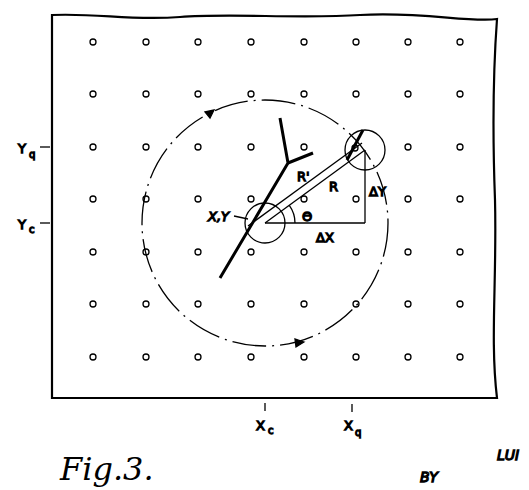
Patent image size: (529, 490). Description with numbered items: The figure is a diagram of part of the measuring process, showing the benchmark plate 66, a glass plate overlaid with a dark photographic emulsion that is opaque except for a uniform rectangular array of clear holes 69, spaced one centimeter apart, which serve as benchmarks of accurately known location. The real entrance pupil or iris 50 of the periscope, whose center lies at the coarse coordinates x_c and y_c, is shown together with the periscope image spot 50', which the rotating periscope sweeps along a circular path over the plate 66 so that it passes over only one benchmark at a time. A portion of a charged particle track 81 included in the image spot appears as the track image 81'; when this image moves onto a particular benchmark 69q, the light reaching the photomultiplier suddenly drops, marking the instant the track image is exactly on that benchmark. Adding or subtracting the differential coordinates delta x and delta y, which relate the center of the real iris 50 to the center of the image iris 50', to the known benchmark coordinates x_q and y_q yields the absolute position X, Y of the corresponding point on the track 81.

The benchmark plate 66 is at (180, 73).
The holes 69 is at (459, 255).
The particular benchmark 69q is at (351, 146).
The entrance pupil of the periscope 50 is at (268, 234).
The periscope image spot 50' is at (380, 149).
The charged particle track 81 is at (259, 198).
The periscope image of the track portion 81' is at (351, 134).